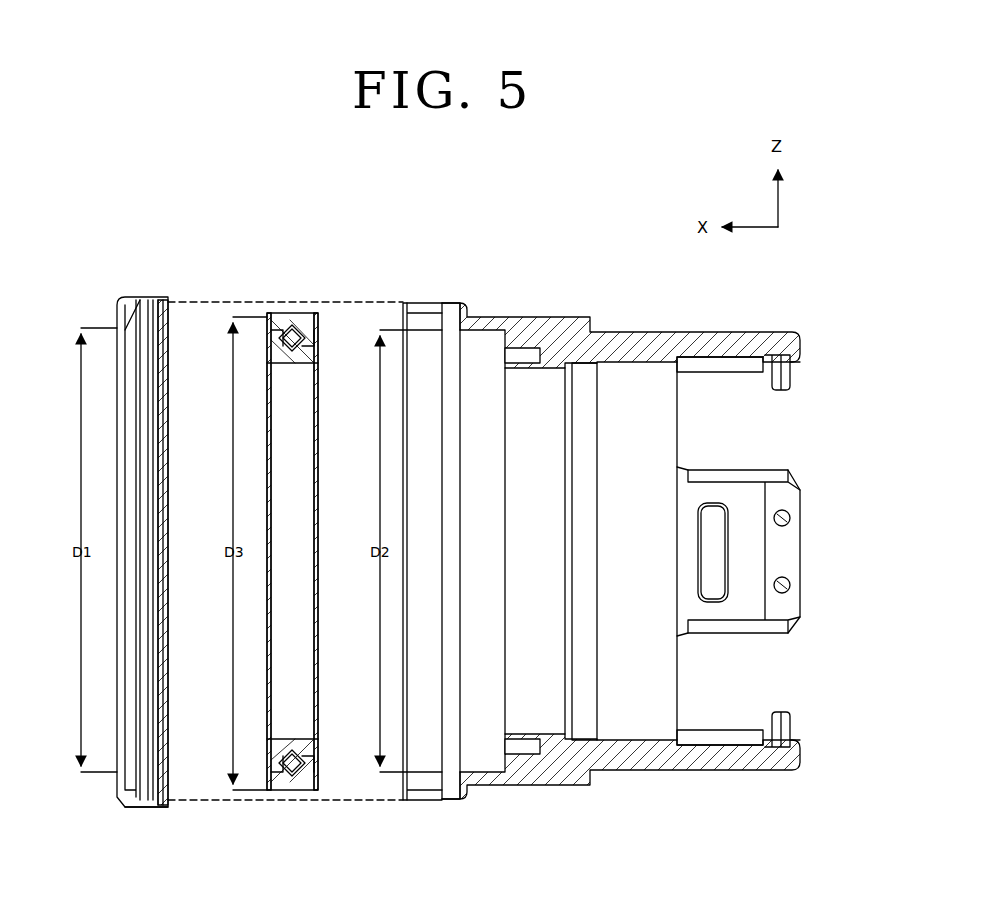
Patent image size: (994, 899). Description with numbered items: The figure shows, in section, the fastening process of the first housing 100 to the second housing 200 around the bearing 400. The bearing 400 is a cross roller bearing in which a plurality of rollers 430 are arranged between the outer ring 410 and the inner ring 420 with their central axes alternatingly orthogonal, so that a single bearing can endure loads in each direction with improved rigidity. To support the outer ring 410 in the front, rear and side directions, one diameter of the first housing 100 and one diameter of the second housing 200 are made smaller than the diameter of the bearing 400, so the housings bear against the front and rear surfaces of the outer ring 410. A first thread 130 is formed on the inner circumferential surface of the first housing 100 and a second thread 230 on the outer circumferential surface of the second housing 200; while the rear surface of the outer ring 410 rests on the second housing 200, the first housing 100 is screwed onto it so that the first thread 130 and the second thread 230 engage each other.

The first housing 100 is at (143, 290).
The first thread 130 is at (149, 815).
The second housing 200 is at (455, 292).
The second thread 230 is at (418, 292).
The bearing 400 is at (301, 509).
The outer ring 410 is at (318, 320).
The inner ring 420 is at (318, 358).
The rollers 430 is at (273, 312).